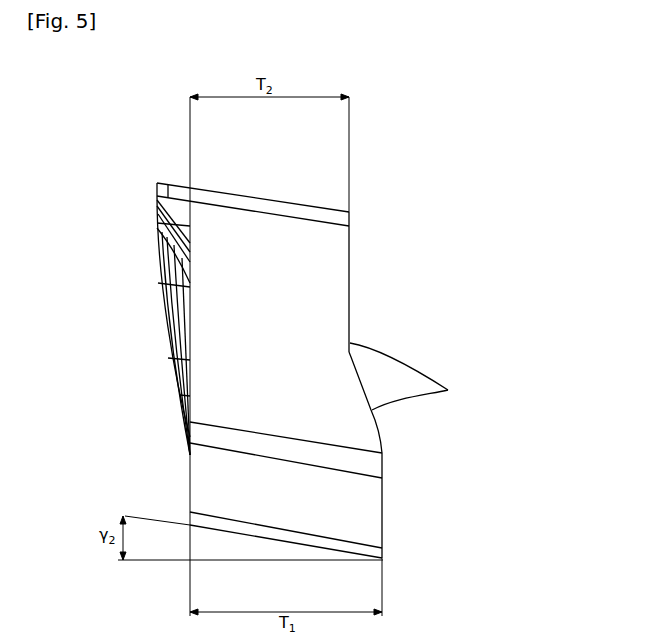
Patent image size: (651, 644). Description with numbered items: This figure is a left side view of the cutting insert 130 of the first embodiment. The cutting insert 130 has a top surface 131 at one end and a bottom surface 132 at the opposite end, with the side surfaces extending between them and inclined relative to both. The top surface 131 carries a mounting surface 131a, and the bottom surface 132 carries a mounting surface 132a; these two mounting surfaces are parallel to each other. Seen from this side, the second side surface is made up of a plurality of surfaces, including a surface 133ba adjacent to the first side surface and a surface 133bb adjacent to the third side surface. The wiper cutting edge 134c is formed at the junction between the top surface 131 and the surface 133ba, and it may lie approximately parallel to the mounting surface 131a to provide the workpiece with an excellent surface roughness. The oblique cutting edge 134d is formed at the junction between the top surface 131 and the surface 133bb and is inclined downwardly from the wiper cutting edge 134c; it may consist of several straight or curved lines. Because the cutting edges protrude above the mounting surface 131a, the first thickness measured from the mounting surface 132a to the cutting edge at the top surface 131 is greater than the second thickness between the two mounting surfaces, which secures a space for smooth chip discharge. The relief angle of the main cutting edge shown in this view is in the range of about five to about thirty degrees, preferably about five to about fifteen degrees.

The cutting insert 130 is at (138, 162).
The top surface 131 is at (364, 316).
The mounting surface of the top surface 131a is at (349, 272).
The bottom surface 132 is at (175, 458).
The mounting surface of the bottom surface 132a is at (173, 357).
The surface of the second side surface adjacent to the third side surface 133bb is at (294, 331).
The surface of the second side surface adjacent to the first side surface 133ba is at (294, 503).
The wiper cutting edge 134c is at (382, 512).
The oblique cutting edge 134d is at (420, 376).